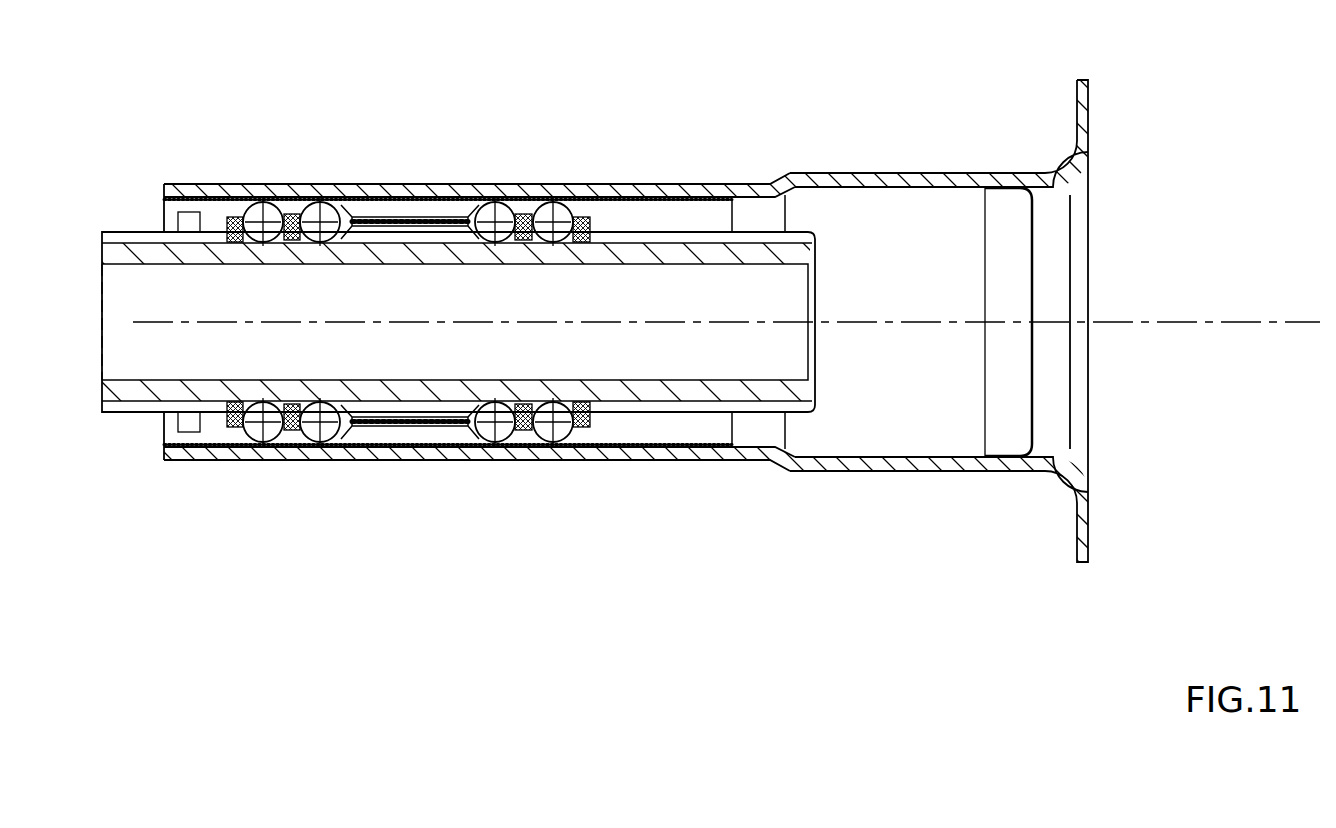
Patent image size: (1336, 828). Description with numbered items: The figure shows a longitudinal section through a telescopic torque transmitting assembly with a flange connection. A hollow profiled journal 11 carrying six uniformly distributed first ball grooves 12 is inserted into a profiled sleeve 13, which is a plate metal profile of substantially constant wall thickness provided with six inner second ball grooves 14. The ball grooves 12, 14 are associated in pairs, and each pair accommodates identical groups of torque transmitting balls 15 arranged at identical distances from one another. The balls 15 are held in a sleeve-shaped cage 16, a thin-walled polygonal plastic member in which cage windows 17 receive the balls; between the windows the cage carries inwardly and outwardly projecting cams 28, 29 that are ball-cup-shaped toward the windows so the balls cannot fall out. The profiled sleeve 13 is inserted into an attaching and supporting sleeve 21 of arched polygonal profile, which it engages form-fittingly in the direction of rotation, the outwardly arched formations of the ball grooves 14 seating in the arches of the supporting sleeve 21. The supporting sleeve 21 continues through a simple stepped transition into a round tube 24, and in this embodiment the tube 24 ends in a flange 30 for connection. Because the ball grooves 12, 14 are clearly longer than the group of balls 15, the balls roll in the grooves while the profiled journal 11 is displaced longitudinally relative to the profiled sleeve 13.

The profiled journal 11 is at (117, 400).
The first ball grooves 12 is at (143, 412).
The profiled sleeve 13 is at (664, 452).
The second ball grooves 14 is at (703, 437).
The torque transmitting ball 15 is at (272, 433).
The cage 16 is at (392, 428).
The cage windows 17 is at (318, 430).
The supporting sleeve 21 is at (753, 452).
The tubular shaft 24 is at (908, 465).
The inwardly projecting cams 28 is at (580, 430).
The outwardly projecting cams 29 is at (525, 432).
The flange 30 is at (1082, 522).